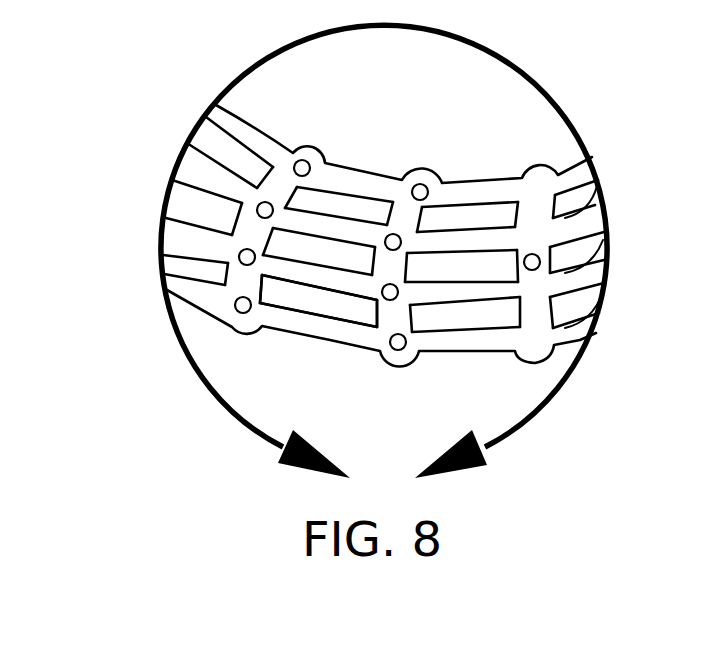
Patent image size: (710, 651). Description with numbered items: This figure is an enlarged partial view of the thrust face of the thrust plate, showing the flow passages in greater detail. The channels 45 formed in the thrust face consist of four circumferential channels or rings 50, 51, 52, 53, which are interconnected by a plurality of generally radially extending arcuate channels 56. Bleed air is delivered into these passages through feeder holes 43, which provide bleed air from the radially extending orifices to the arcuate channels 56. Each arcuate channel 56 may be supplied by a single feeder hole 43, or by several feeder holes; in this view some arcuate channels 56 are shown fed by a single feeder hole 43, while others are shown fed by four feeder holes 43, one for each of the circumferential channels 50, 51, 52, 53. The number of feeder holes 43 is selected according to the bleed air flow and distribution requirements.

The channels 45 is at (382, 234).
The feeder holes 43 is at (295, 173).
The circumferential channel 50 is at (585, 158).
The circumferential channel 51 is at (605, 192).
The circumferential channel 52 is at (612, 244).
The circumferential channel 53 is at (612, 299).
The arcuate channels 56 is at (377, 306).